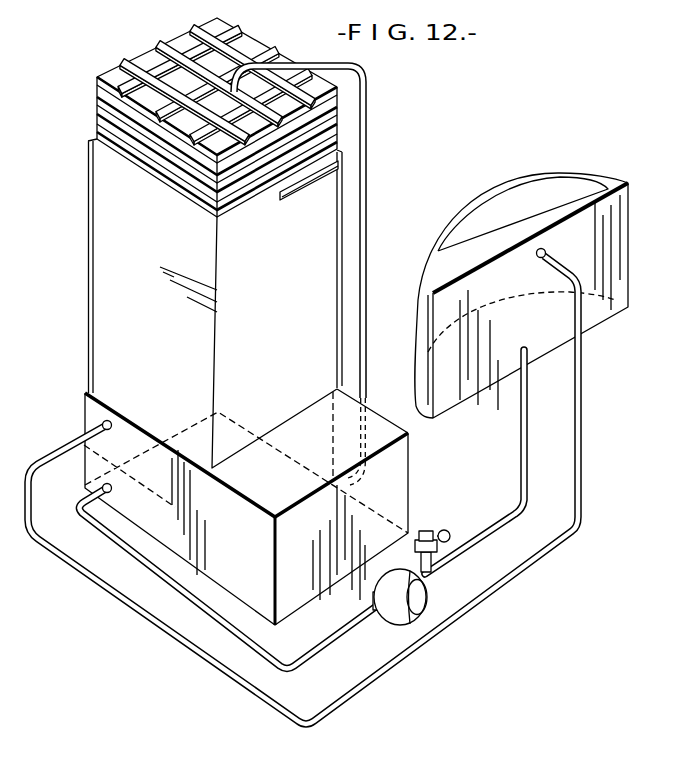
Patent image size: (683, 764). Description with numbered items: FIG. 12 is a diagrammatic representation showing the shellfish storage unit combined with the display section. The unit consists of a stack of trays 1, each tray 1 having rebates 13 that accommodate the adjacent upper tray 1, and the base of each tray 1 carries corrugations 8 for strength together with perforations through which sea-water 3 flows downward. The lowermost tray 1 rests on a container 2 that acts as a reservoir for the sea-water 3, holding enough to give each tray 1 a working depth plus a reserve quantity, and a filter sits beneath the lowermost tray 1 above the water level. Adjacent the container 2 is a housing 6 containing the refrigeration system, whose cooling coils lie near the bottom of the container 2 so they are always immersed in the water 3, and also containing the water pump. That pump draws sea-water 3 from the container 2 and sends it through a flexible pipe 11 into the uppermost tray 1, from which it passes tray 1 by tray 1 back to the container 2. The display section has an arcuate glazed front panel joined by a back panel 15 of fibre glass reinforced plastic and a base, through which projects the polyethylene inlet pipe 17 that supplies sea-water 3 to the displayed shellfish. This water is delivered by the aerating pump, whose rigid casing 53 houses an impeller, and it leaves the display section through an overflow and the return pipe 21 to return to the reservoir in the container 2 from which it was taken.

The tray 1 is at (93, 128).
The container 2 is at (86, 412).
The sea-water 3 is at (103, 486).
The housing 6 is at (410, 474).
The corrugations 8 is at (155, 62).
The flexible pipe 11 is at (368, 148).
The rebates 13 is at (95, 96).
The back panel 15 is at (606, 304).
The inlet pipe 17 is at (515, 514).
The return pipe 21 is at (580, 499).
The rigid casing 53 is at (412, 622).